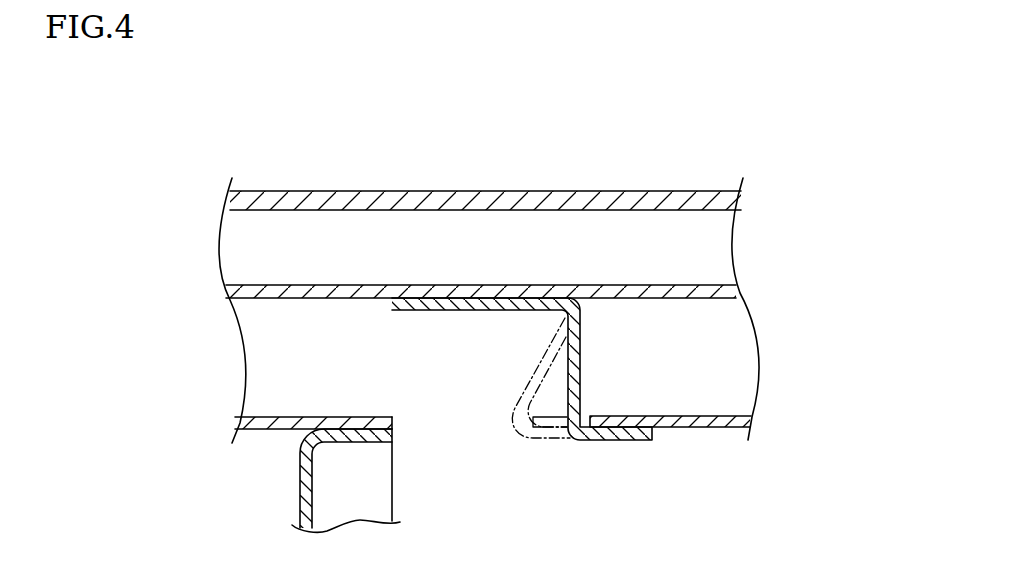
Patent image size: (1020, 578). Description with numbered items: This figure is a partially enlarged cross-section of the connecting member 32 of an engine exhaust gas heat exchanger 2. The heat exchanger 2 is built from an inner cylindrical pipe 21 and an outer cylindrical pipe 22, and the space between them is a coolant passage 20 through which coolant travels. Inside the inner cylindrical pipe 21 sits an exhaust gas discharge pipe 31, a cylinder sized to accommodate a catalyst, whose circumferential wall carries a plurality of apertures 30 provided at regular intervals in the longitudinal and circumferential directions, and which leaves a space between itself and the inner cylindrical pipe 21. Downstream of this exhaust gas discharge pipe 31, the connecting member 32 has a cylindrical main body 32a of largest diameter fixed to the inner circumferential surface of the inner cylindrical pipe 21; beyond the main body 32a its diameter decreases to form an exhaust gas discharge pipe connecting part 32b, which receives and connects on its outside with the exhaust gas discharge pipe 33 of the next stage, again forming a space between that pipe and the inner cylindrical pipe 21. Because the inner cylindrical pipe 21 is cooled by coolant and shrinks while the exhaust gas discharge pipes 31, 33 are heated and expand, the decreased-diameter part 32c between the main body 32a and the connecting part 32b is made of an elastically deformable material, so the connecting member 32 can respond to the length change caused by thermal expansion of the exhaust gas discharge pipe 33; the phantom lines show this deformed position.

The heat exchanger 2 is at (489, 257).
The coolant passage 20 is at (296, 228).
The inner cylindrical pipe 21 is at (413, 285).
The outer cylindrical pipe 22 is at (353, 191).
The apertures 30 is at (711, 428).
The exhaust gas discharge pipe 31 is at (298, 417).
The connecting member 32 is at (489, 425).
The main body 32a is at (432, 311).
The exhaust gas discharge pipe connecting part 32b is at (633, 441).
The decreased-diameter part 32c is at (581, 360).
The exhaust gas discharge pipe 33 is at (742, 416).